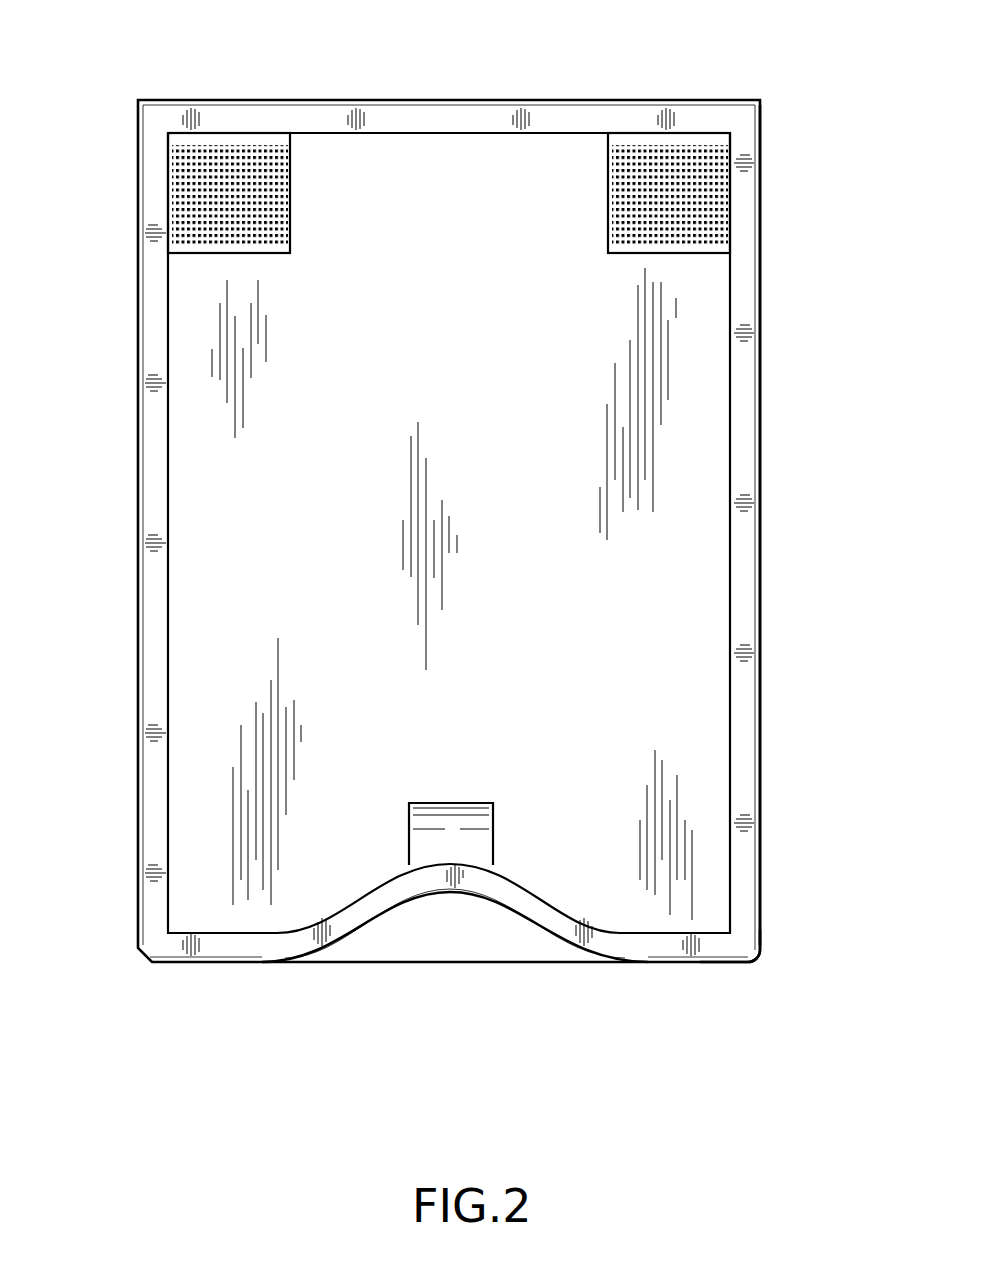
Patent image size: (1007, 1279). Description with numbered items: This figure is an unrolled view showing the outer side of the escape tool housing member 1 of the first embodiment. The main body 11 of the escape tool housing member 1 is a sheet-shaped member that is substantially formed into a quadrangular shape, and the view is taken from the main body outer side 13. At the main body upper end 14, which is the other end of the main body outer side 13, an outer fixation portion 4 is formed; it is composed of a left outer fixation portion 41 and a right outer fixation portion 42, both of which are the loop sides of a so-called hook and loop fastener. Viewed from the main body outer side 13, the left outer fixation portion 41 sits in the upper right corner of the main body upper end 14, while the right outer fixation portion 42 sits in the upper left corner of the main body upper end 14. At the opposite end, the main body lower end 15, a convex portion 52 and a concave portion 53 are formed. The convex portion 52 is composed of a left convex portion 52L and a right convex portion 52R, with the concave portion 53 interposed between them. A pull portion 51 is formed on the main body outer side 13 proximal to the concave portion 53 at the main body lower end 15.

The escape tool housing member 1 is at (138, 112).
The main body 11 is at (200, 100).
The main body outer side 13 is at (558, 133).
The main body upper end 14 is at (760, 153).
The main body lower end 15 is at (757, 947).
The outer fixation portion 4 is at (605, 208).
The left outer fixation portion 41 is at (690, 200).
The right outer fixation portion 42 is at (195, 195).
The pull portion 51 is at (458, 803).
The convex portion 52 is at (678, 1003).
The right convex portion 52R is at (262, 962).
The left convex portion 52L is at (650, 962).
The concave portion 53 is at (450, 893).